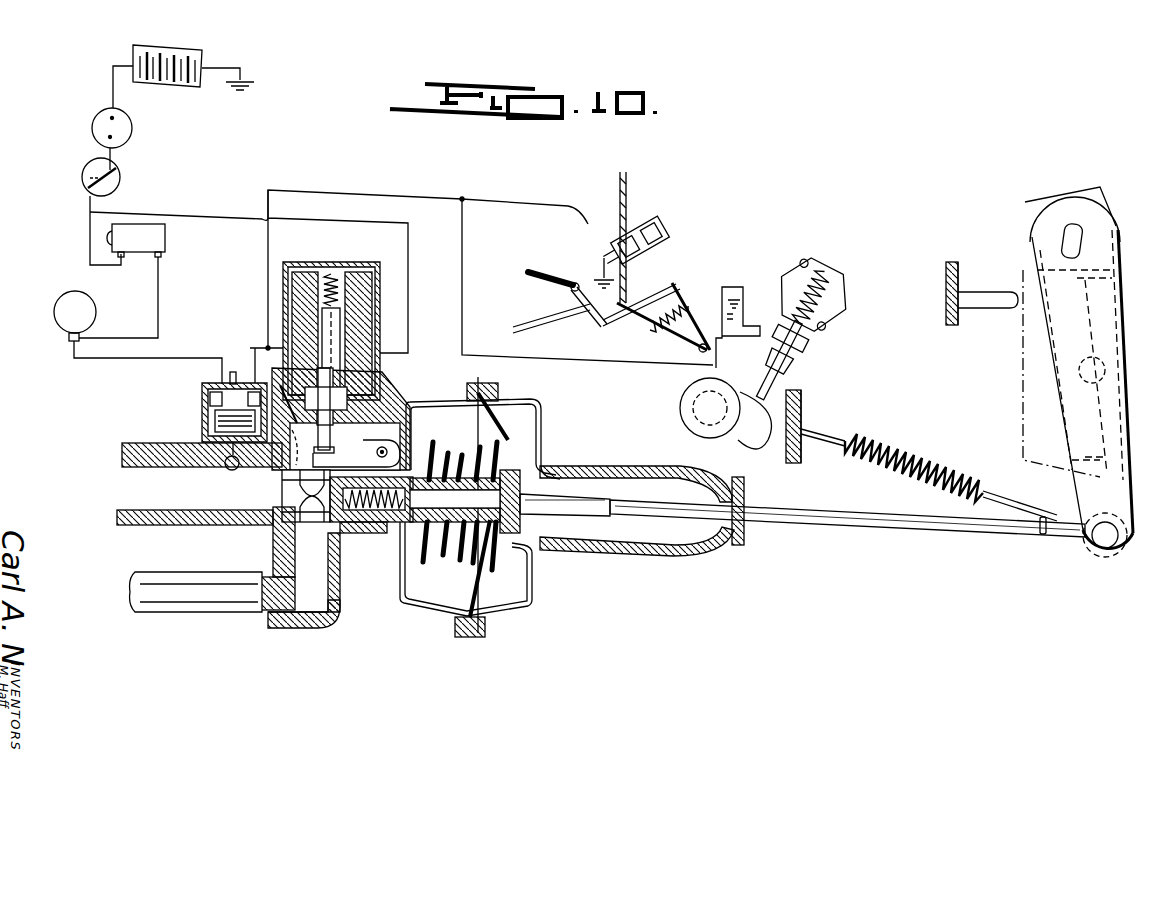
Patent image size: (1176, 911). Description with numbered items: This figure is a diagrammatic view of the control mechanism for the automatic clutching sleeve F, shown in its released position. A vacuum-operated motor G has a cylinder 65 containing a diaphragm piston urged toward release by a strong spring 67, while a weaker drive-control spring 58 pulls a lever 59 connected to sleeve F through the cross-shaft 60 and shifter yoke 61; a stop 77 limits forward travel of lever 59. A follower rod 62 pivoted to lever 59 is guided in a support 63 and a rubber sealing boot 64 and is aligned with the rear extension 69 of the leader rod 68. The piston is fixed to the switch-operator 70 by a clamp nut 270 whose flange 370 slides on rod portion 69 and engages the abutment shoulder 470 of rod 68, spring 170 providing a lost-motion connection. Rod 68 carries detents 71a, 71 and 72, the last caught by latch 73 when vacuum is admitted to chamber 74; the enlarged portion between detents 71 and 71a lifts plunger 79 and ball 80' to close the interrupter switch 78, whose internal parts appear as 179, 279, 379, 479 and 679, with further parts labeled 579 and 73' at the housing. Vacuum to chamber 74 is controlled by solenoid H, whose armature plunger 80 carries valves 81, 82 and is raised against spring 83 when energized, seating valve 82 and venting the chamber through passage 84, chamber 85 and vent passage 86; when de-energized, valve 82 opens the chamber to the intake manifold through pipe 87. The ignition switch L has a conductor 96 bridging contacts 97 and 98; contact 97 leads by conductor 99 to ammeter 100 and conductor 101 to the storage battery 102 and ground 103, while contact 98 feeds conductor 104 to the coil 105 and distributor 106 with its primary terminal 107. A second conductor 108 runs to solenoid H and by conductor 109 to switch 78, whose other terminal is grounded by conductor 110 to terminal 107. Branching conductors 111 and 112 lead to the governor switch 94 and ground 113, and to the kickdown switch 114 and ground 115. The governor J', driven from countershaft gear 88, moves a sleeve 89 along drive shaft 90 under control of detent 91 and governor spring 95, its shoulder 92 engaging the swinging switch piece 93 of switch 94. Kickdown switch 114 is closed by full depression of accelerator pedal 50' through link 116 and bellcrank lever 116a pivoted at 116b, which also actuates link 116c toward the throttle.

The storage battery 102 is at (175, 58).
The conductor 101 is at (113, 84).
The ground 103 is at (240, 92).
The ammeter 100 is at (92, 127).
The conductor 99 is at (128, 145).
The contact 98 is at (88, 190).
The contact 97 is at (119, 176).
The conductor 96 is at (118, 186).
The ignition switch L is at (84, 168).
The second conductor 108 is at (185, 216).
The coil 105 is at (165, 238).
The conductor 104 is at (88, 245).
The distributor 106 is at (68, 312).
The primary terminal 107 is at (68, 338).
The grounding conductor 110 is at (96, 360).
The conductor 109 is at (256, 345).
The terminal 679 is at (233, 372).
The interrupter switch 78 is at (206, 394).
The valve part 179 is at (212, 398).
The valve part 279 is at (215, 412).
The valve coil 479 is at (215, 425).
The valve body 379 is at (205, 440).
The solenoid H is at (380, 300).
The armature plunger 80 is at (368, 333).
The spring 83 is at (331, 273).
The valve 81 is at (355, 345).
The valve 82 is at (360, 405).
The chamber 85 is at (352, 406).
The passage 84 is at (374, 410).
The latch 73 is at (356, 452).
The detent 71 is at (300, 520).
The detent 71a is at (262, 518).
The spring 170 is at (338, 532).
The switch-operator 70 is at (366, 524).
The leader rod 68 is at (398, 545).
The pipe 87 is at (214, 610).
The plunger 79 is at (232, 456).
The ball 80' is at (208, 478).
The vent passage 86 is at (252, 462).
The passage 579 is at (262, 472).
The nut 73' is at (265, 495).
The pressure fluid operated motor G is at (522, 404).
The cylinder 65 is at (508, 440).
The spring 67 is at (420, 600).
The clamp nut 270 is at (535, 548).
The chamber 74 is at (458, 612).
The detent 72 is at (420, 456).
The abutment shoulder 470 is at (455, 500).
The flange 370 is at (520, 492).
The rear extension 69 is at (560, 496).
The follower rod 62 is at (900, 530).
The rubber sealing boot 64 is at (680, 554).
The support 63 is at (745, 540).
The drive-control spring 58 is at (896, 450).
The lever 59 is at (1090, 493).
The sleeve F is at (1025, 408).
The cross-shaft 60 is at (1082, 234).
The shifter yoke 61 is at (1046, 372).
The stop 77 is at (976, 306).
The governor J' is at (793, 324).
The countershaft gear 88 is at (680, 400).
The governor switch 94 is at (750, 395).
The drive shaft 90 is at (792, 396).
The detent 91 is at (790, 386).
The shoulder 92 is at (810, 356).
The sleeve 89 is at (812, 340).
The governor spring 95 is at (836, 300).
The swinging switch piece 93 is at (760, 326).
The ground 113 is at (760, 290).
The accelerator pedal 50' is at (664, 308).
The conductor 111 is at (587, 282).
The conductor 112 is at (528, 200).
The kickdown switch 114 is at (590, 222).
The ground 115 is at (612, 272).
The link 116 is at (618, 326).
The bellcrank lever 116a is at (540, 278).
The pivot 116b is at (571, 290).
The link 116c is at (526, 322).